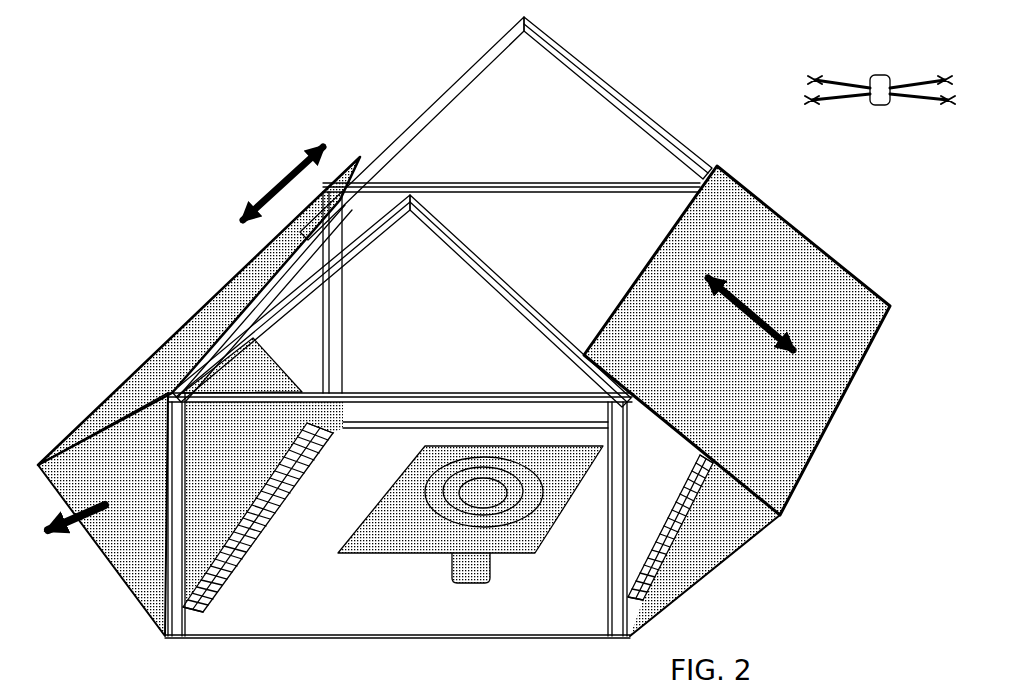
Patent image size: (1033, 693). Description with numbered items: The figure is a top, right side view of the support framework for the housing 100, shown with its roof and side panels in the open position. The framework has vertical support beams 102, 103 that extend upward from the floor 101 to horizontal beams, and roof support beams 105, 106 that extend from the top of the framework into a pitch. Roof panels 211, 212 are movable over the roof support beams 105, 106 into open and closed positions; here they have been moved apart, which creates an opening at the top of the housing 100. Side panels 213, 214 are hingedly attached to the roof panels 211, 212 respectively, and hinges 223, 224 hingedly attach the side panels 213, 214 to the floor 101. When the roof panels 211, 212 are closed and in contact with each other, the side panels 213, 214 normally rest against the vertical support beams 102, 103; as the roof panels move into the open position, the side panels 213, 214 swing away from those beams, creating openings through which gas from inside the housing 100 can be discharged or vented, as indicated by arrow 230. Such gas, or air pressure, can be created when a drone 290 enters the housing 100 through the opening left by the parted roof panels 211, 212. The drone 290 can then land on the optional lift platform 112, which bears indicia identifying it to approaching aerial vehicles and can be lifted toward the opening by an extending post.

The housing 100 is at (204, 114).
The floor 101 is at (462, 628).
The vertical support beam 102 is at (342, 318).
The vertical support beam 103 is at (600, 615).
The roof support beam 105 is at (452, 98).
The roof support beam 106 is at (642, 117).
The lift platform 112 is at (396, 540).
The roof panel 211 is at (236, 286).
The roof panel 212 is at (773, 226).
The side panel 213 is at (143, 598).
The side panel 214 is at (740, 524).
The hinge 223 is at (302, 468).
The hinge 224 is at (665, 582).
The arrow 230 is at (68, 533).
The drone 290 is at (884, 82).